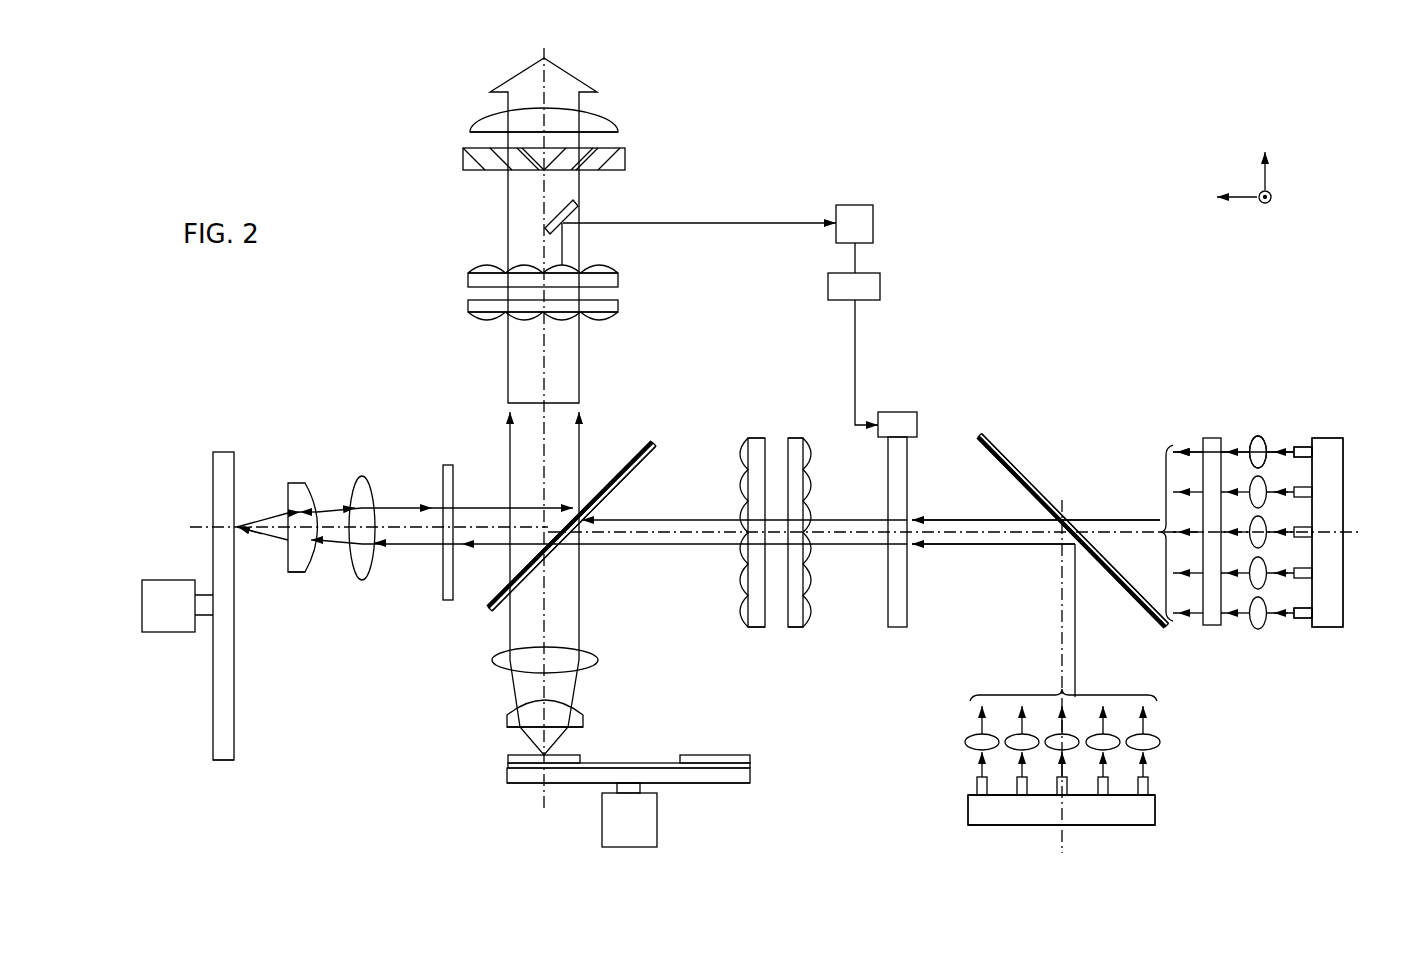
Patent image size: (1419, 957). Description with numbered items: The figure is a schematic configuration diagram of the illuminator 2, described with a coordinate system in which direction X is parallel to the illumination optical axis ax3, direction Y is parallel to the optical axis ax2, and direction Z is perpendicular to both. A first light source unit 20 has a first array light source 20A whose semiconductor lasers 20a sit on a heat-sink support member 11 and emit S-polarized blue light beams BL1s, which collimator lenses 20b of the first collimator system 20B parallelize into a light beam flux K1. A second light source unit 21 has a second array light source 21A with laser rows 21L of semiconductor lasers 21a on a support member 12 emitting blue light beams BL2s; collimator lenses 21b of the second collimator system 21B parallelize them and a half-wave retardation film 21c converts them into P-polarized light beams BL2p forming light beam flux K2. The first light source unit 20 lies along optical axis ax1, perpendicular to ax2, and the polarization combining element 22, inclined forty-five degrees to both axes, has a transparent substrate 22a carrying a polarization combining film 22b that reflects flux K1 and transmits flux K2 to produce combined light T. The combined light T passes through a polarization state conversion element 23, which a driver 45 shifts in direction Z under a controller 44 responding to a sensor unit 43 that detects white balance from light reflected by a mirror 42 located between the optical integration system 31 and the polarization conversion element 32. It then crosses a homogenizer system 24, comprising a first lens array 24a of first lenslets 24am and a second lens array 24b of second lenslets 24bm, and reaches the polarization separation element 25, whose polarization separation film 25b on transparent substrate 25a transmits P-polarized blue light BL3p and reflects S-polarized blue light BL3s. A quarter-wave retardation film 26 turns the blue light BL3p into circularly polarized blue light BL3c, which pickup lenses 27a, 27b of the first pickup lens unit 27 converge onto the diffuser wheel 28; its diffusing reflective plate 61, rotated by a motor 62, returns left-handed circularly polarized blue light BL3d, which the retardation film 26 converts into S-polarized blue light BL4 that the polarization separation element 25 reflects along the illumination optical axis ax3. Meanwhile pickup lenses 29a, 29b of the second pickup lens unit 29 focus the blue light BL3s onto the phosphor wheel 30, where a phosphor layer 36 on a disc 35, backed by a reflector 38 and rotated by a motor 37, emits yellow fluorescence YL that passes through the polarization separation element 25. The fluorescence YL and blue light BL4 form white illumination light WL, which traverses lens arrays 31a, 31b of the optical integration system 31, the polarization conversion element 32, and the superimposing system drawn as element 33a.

The illuminator 2 is at (1069, 210).
The support member 11 is at (968, 808).
The support member 12 is at (1327, 438).
The first light source unit 20 is at (1167, 816).
The first array light source 20A is at (968, 782).
The first collimator system 20B is at (960, 735).
The semiconductor lasers 20a is at (1150, 785).
The collimator lenses 20b is at (1162, 742).
The second light source unit 21 is at (1363, 431).
The second array light source 21A is at (1291, 427).
The laser rows 21L is at (1303, 613).
The second collimator system 21B is at (1246, 424).
The semiconductor lasers 21a is at (1300, 446).
The collimator lenses 21b is at (1258, 435).
The retardation film 21c is at (1209, 438).
The polarization combining element 22 is at (1032, 380).
The transparent substrate 22a is at (998, 450).
The polarization combining film 22b is at (978, 437).
The polarization state conversion element 23 is at (895, 627).
The homogenizer system 24 is at (712, 684).
The first lens array 24a is at (800, 627).
The second lens array 24b is at (755, 627).
The first lenslets 24am is at (806, 438).
The second lenslets 24bm is at (745, 438).
The polarization separation element 25 is at (698, 380).
The transparent substrate 25a is at (659, 443).
The polarization separation film 25b is at (645, 447).
The retardation film 26 is at (443, 488).
The first pickup lens unit 27 is at (378, 662).
The pickup lens 27a is at (290, 573).
The pickup lens 27b is at (362, 581).
The diffuser wheel 28 is at (227, 771).
The second pickup lens unit 29 is at (420, 652).
The pickup lens 29a is at (507, 722).
The pickup lens 29b is at (495, 660).
The phosphor wheel 30 is at (753, 801).
The optical integration system 31 is at (697, 250).
The lens array 31a is at (618, 306).
The lens array 31b is at (618, 280).
The polarization conversion element 32 is at (625, 160).
The superimposing lens 33a is at (612, 113).
The disc 35 is at (750, 776).
The phosphor layer 36 is at (750, 757).
The motor 37 is at (657, 820).
The reflector 38 is at (750, 765).
The mirror for monitoring the amount of light 42 is at (577, 203).
The sensor unit 43 is at (873, 222).
The controller 44 is at (868, 287).
The driver 45 is at (898, 412).
The diffusing reflective plate 61 is at (214, 736).
The motor 62 is at (165, 625).
The optical axis ax1 is at (1062, 838).
The optical axis ax2 is at (1352, 535).
The illumination optical axis ax3 is at (544, 810).
The light beam flux K1 is at (978, 547).
The light beam flux K2 is at (1163, 470).
The combined light T is at (925, 597).
The blue light beam BL1s is at (1150, 730).
The blue light beam BL2s is at (1244, 629).
The light beams BL2p is at (1198, 627).
The S-polarized blue light BL3s is at (615, 523).
The P-polarized blue light BL3p is at (695, 547).
The right-handed circularly polarized blue light BL3c is at (312, 572).
The left-handed circularly polarized blue light BL3d is at (322, 508).
The S-polarized blue light BL4 is at (577, 473).
The yellow fluorescence YL is at (508, 430).
The illumination light WL is at (508, 97).
The direction X is at (1265, 152).
The direction Y is at (1226, 197).
The direction Z is at (1276, 197).